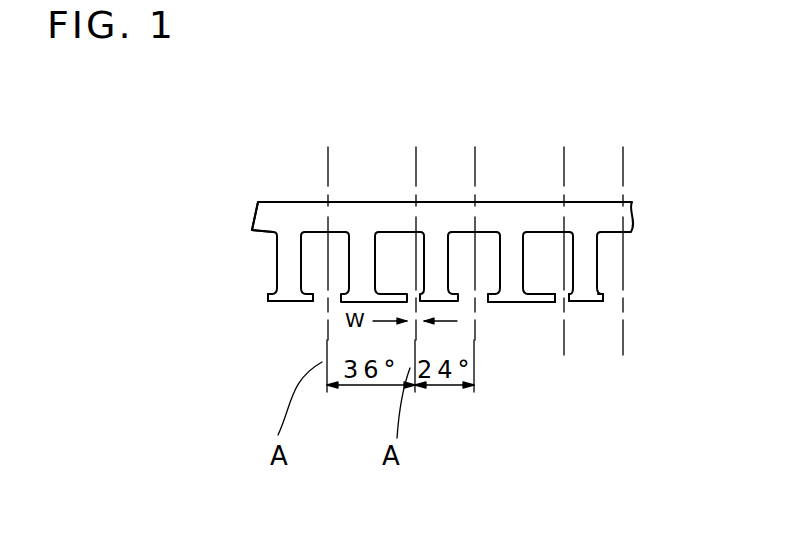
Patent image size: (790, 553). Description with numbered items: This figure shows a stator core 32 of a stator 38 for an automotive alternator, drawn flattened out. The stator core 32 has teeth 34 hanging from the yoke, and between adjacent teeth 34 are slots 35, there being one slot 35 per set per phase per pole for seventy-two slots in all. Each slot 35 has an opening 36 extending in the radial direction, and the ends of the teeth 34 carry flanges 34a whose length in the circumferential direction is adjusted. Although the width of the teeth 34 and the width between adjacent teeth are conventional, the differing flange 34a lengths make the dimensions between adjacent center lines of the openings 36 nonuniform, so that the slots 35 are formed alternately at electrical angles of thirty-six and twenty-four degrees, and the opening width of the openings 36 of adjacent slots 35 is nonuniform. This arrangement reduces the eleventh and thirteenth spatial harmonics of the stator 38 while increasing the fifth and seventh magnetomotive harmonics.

The stator core 32 is at (268, 213).
The teeth 34 is at (270, 280).
The flanges 34a is at (538, 303).
The slot 35 is at (315, 292).
The openings 36 is at (563, 310).
The stator 38 is at (238, 264).